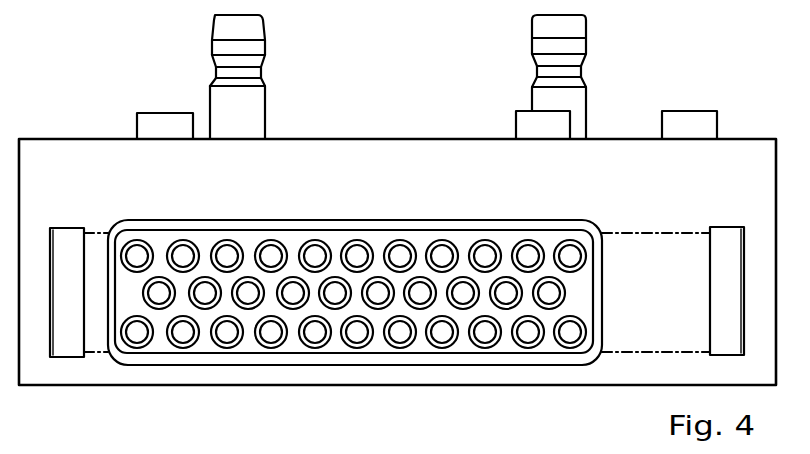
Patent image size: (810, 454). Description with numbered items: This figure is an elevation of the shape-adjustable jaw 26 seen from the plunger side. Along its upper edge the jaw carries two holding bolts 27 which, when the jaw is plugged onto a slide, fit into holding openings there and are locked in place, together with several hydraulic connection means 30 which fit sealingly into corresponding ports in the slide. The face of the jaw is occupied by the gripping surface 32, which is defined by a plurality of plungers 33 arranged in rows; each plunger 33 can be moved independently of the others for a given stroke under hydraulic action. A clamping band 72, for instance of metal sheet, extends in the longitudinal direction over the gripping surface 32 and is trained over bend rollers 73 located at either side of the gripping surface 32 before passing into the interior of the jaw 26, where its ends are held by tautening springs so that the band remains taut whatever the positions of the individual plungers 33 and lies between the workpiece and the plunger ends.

The shape-adjustable jaw 26 is at (761, 143).
The holding bolt 27 is at (258, 28).
The hydraulic connection means 30 is at (166, 122).
The gripping surface 32 is at (462, 233).
The plunger 33 is at (317, 330).
The clamping band 72 is at (647, 232).
The bend roller 73 is at (66, 243).